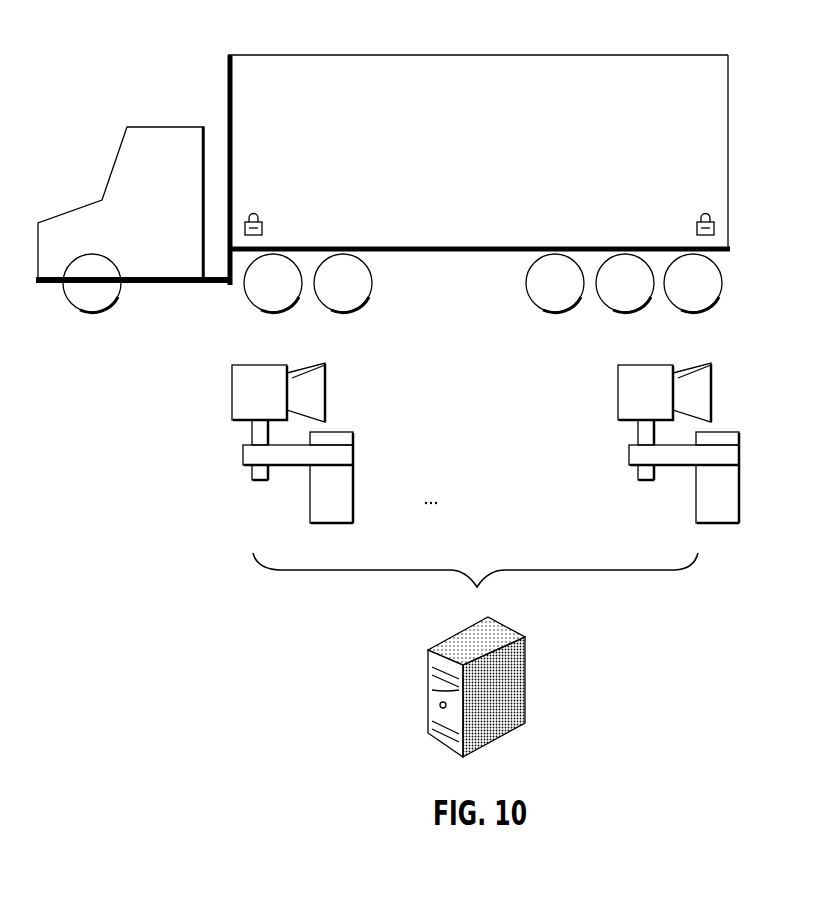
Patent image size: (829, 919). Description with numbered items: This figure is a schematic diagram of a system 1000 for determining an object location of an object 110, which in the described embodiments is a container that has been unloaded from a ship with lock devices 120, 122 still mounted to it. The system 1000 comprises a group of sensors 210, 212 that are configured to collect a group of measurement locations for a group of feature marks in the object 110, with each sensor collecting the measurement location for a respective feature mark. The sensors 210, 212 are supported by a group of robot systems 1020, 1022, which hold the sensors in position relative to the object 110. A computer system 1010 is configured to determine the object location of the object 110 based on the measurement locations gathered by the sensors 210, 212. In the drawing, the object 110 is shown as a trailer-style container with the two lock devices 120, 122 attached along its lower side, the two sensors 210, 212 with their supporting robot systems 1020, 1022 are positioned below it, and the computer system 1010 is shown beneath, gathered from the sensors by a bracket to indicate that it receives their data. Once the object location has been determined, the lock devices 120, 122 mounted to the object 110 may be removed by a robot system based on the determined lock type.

The system 1000 is at (180, 30).
The object 110 is at (650, 55).
The lock device 120 is at (268, 221).
The lock device 122 is at (713, 218).
The sensor 210 is at (270, 365).
The sensor 212 is at (656, 365).
The robot system 1020 is at (333, 432).
The robot system 1022 is at (719, 432).
The computer system 1010 is at (508, 628).